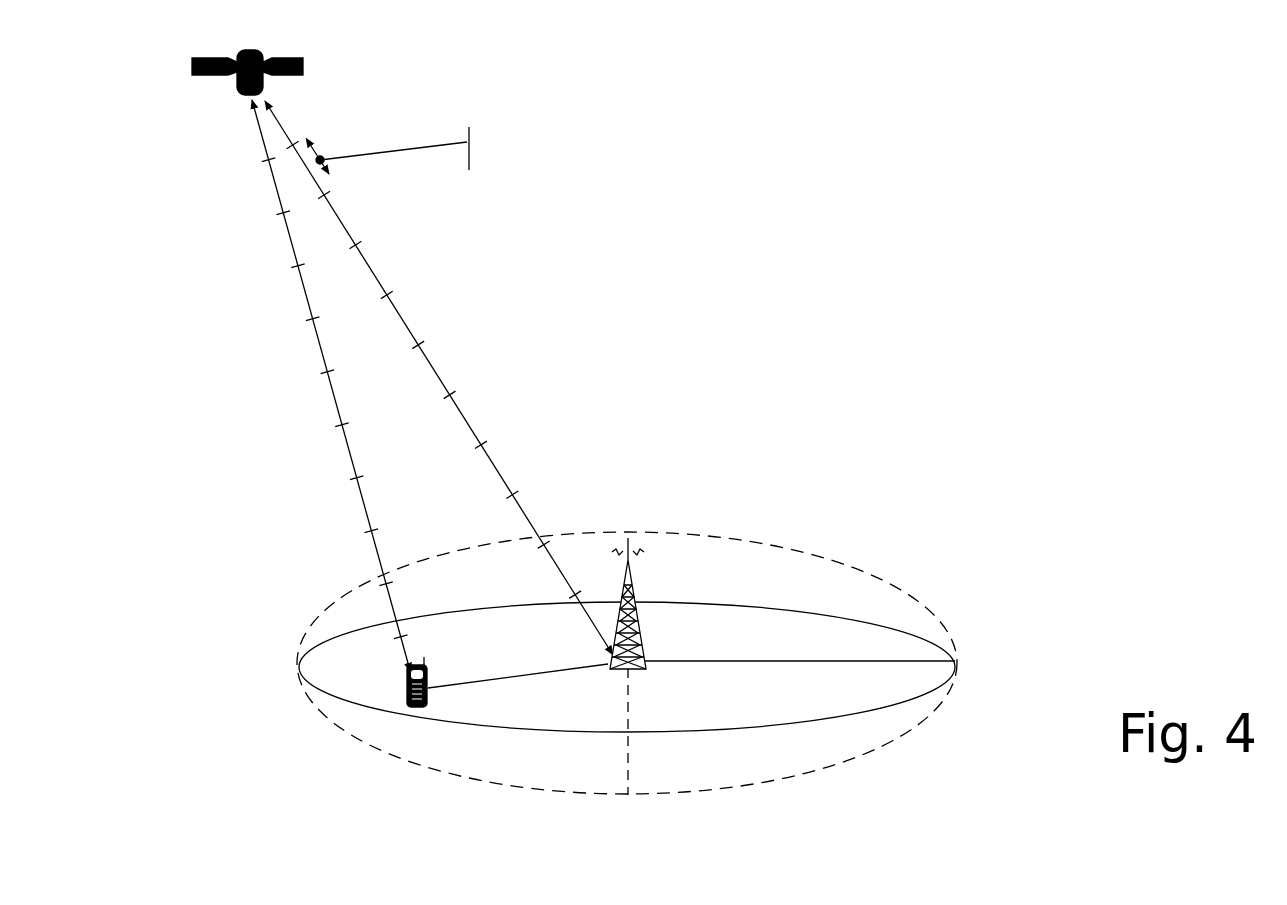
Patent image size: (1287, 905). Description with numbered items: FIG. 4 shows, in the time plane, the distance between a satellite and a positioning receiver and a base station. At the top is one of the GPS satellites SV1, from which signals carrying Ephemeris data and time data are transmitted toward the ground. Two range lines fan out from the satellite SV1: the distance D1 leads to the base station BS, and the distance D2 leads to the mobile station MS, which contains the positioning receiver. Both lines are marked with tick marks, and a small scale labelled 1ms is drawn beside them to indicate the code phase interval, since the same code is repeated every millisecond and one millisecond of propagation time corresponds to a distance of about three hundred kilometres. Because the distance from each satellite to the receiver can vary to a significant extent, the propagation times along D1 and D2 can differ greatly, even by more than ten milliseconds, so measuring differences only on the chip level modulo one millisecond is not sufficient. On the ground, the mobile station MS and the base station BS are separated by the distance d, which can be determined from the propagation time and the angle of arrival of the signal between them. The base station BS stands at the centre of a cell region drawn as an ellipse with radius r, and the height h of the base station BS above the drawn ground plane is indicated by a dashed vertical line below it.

The satellite SV1 is at (359, 72).
The one millisecond code phase interval 1ms is at (419, 150).
The distance D1 is at (371, 270).
The distance D2 is at (305, 293).
The positioning receiver MS is at (433, 687).
The base station BS is at (615, 614).
The distance d is at (518, 665).
The radius r is at (791, 647).
The height h is at (640, 731).